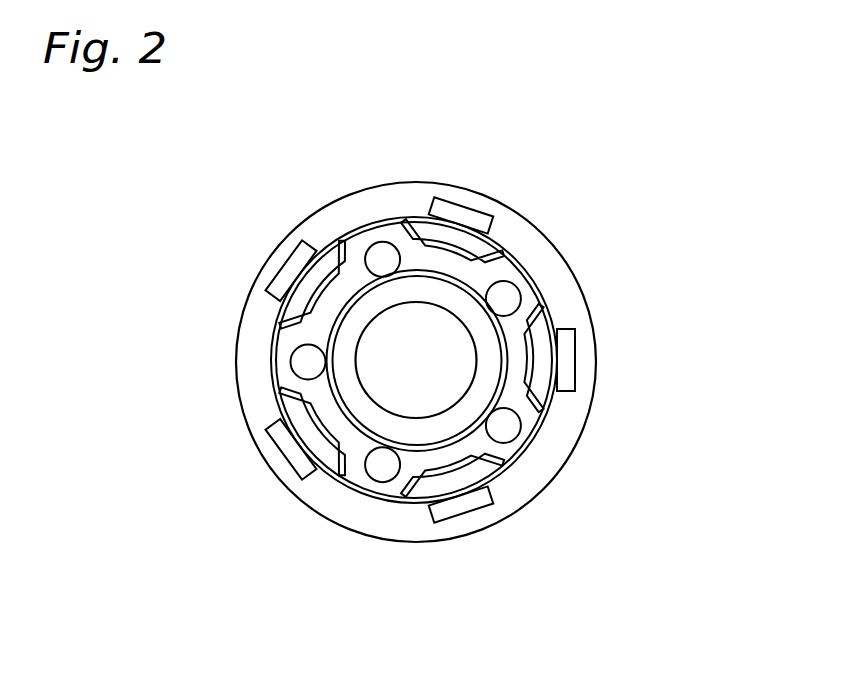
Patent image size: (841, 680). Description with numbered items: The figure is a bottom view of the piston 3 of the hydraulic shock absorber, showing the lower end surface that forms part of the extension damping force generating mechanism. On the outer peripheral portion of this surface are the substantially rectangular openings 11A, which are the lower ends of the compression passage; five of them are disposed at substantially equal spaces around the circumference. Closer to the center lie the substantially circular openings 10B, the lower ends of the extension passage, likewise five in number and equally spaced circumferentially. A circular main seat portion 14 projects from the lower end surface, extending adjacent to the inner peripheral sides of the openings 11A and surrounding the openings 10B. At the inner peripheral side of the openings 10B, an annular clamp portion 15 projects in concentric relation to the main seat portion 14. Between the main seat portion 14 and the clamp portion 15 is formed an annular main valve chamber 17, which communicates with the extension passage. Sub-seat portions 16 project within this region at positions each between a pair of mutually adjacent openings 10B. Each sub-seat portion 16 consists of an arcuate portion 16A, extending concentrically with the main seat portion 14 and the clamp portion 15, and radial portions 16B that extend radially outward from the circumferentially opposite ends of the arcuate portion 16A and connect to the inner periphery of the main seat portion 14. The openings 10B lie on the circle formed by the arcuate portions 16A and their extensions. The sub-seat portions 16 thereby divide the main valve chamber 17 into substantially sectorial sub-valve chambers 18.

The piston 3 is at (557, 250).
The clamp portion 15 is at (443, 295).
The opening 10B is at (302, 363).
The main seat portion 14 is at (555, 306).
The sub-seat portion 16 is at (553, 325).
The main valve chamber 17 is at (508, 272).
The arcuate portion 16A is at (553, 405).
The radial portion 16B is at (545, 283).
The sub-valve chamber 18 is at (543, 355).
The opening 11A is at (563, 377).